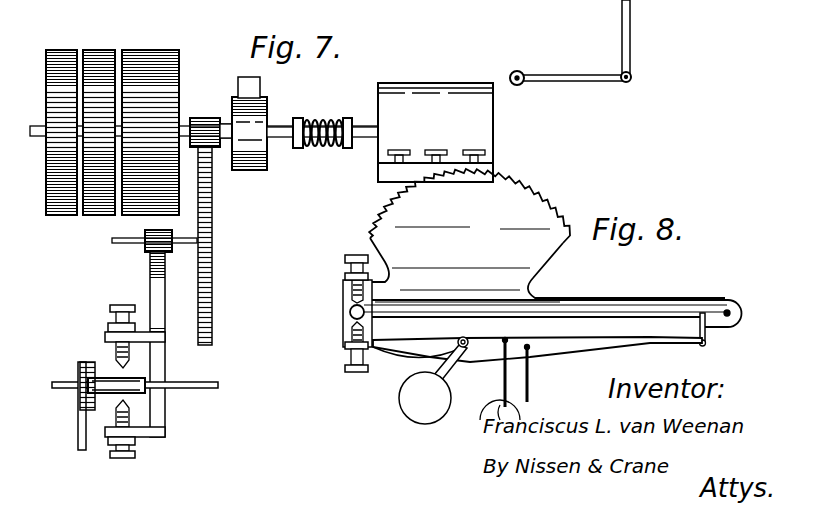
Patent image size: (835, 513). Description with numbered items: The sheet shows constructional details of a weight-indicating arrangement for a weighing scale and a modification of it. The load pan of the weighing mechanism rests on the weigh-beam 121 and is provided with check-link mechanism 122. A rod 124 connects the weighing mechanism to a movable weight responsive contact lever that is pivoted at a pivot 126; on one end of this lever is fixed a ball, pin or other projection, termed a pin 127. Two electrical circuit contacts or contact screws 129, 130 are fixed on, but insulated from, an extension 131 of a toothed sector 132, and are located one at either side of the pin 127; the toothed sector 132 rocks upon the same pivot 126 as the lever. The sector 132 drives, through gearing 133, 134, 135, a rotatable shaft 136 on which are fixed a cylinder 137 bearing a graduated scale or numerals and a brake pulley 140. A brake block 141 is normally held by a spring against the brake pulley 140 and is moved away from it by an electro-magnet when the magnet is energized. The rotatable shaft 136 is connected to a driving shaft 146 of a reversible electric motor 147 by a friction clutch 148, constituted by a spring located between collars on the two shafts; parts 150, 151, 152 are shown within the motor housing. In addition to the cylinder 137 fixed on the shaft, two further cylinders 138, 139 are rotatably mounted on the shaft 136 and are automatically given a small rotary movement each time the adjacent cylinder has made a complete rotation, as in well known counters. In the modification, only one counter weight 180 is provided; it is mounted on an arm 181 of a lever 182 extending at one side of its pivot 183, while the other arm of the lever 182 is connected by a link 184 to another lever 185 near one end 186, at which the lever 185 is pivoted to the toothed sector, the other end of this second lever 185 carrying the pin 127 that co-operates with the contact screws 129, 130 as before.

In FIG. 7, the weigh-beam 121 is at (537, 38).
In FIG. 7, the check-link mechanism 122 is at (563, 72).
In FIG. 7, the rod 124 is at (80, 427).
In FIG. 7, the pivot 126 is at (190, 390).
In FIG. 7, the pin 127 is at (102, 397).
In FIG. 8, the pin 127 is at (349, 312).
In FIG. 7, the contact screw 129 is at (113, 350).
In FIG. 7, the contact screw 130 is at (132, 418).
In FIG. 7, the extension 131 is at (166, 362).
In FIG. 7, the toothed sector 132 is at (150, 277).
In FIG. 7, the gearing 133 is at (143, 250).
In FIG. 7, the gearing 134 is at (212, 265).
In FIG. 7, the gearing 135 is at (204, 116).
In FIG. 7, the rotatable shaft 136 is at (224, 148).
In FIG. 7, the cylinder 137 is at (150, 40).
In FIG. 7, the cylinder 138 is at (97, 48).
In FIG. 7, the cylinder 139 is at (50, 48).
In FIG. 7, the brake pulley 140 is at (245, 172).
In FIG. 7, the brake block 141 is at (252, 88).
In FIG. 7, the driving shaft 146 is at (365, 140).
In FIG. 7, the reversible electric motor 147 is at (482, 110).
In FIG. 7, the friction clutch 148 is at (313, 125).
In FIG. 7, the contact 150 is at (403, 143).
In FIG. 7, the contact 151 is at (435, 148).
In FIG. 7, the contact 152 is at (464, 143).
In FIG. 8, the counter weight 180 is at (412, 404).
In FIG. 8, the arm 181 is at (450, 372).
In FIG. 8, the lever 182 is at (655, 346).
In FIG. 8, the pivot 183 is at (430, 356).
In FIG. 8, the link 184 is at (708, 332).
In FIG. 8, the lever 185 is at (592, 317).
In FIG. 8, the end 186 is at (735, 307).